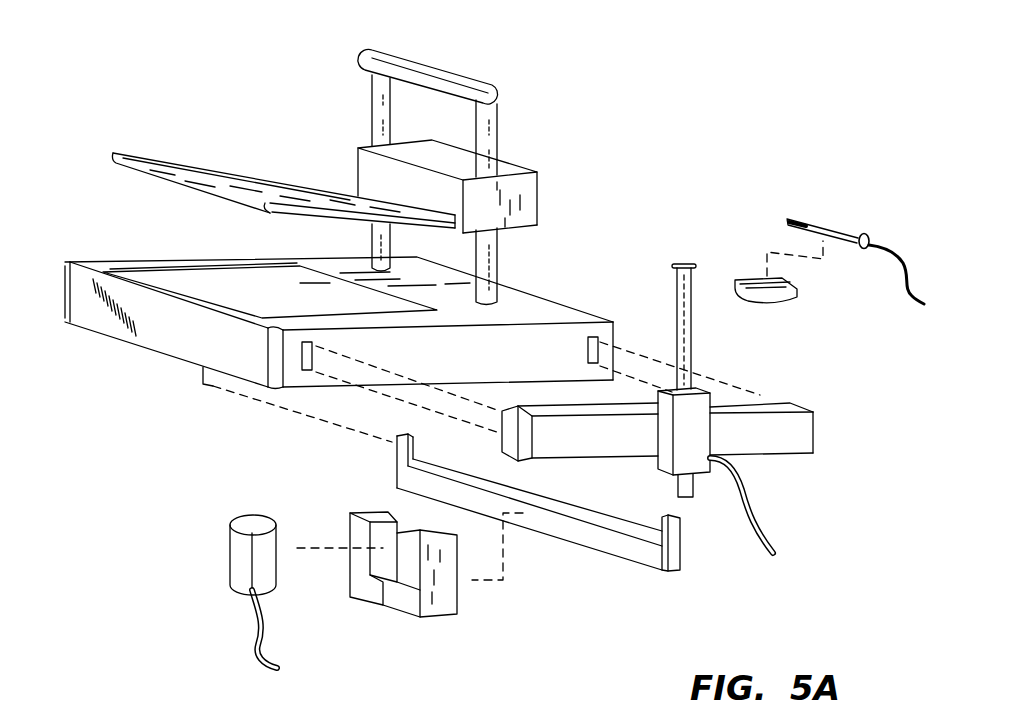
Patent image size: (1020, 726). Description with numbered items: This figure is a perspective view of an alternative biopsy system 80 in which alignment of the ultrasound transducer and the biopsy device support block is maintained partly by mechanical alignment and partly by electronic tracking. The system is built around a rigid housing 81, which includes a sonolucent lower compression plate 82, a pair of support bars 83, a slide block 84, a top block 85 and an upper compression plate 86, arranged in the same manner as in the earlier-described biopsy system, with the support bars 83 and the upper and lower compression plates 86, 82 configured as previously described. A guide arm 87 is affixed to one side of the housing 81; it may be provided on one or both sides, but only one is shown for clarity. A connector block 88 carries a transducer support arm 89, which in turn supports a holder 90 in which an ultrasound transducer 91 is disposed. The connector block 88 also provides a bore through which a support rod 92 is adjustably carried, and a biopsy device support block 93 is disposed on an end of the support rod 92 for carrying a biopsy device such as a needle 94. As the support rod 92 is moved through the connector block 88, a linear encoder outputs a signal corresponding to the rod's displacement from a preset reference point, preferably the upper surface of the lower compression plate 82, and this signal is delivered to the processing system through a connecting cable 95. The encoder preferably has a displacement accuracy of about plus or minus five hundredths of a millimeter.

The biopsy system 80 is at (648, 77).
The rigid housing 81 is at (105, 317).
The sonolucent lower compression plate 82 is at (273, 310).
The support bars 83 is at (372, 82).
The slide block 84 is at (538, 197).
The top block 85 is at (457, 71).
The upper compression plate 86 is at (181, 161).
The guide arm 87 is at (815, 430).
The connector block 88 is at (700, 443).
The transducer support arm 89 is at (614, 544).
The holder 90 is at (458, 607).
The ultrasound transducer 91 is at (231, 551).
The support rod 92 is at (693, 350).
The biopsy device support block 93 is at (797, 294).
The needle 94 is at (843, 231).
The connecting cable 95 is at (770, 543).